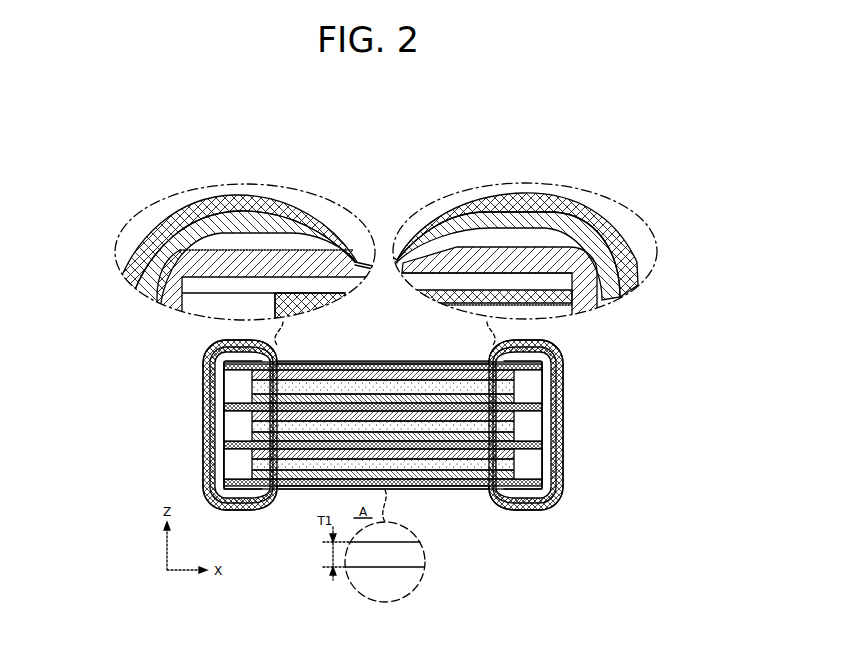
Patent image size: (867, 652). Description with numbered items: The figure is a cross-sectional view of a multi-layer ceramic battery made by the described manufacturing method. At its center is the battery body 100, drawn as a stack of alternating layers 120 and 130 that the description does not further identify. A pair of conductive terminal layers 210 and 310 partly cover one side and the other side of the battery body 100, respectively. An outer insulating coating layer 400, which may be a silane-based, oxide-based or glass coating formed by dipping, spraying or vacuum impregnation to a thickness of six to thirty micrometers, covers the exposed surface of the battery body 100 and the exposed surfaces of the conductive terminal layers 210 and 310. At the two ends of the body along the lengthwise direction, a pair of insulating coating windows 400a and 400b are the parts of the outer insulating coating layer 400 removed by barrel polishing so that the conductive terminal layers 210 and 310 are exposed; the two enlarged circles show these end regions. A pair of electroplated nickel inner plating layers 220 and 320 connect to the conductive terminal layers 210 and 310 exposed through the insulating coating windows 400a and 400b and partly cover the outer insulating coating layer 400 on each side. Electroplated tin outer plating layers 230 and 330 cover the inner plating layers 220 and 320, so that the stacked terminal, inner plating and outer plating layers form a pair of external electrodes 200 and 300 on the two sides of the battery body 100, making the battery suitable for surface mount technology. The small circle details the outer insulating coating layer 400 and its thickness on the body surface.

The battery body 100 is at (348, 352).
The dielectric layer 120 is at (203, 361).
The internal electrode 130 is at (233, 384).
The external electrode 200 is at (196, 440).
The conductive terminal layer 210 is at (219, 390).
The inner plating layer 220 is at (212, 408).
The outer plating layer 230 is at (207, 428).
The external electrode 300 is at (574, 366).
The conductive terminal layer 310 is at (548, 376).
The inner plating layer 320 is at (560, 393).
The outer plating layer 330 is at (565, 418).
The outer insulating coating layer 400 is at (399, 360).
The insulating coating window 400a is at (115, 258).
The insulating coating window 400b is at (637, 237).